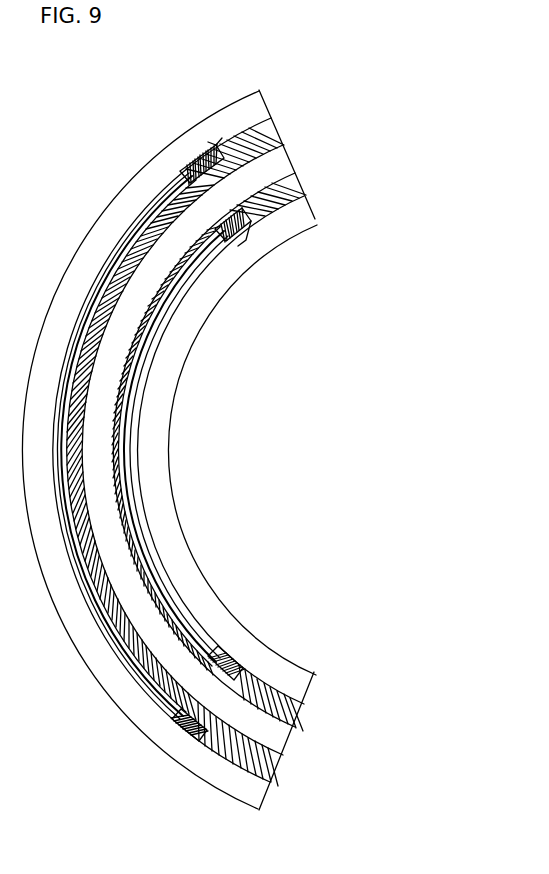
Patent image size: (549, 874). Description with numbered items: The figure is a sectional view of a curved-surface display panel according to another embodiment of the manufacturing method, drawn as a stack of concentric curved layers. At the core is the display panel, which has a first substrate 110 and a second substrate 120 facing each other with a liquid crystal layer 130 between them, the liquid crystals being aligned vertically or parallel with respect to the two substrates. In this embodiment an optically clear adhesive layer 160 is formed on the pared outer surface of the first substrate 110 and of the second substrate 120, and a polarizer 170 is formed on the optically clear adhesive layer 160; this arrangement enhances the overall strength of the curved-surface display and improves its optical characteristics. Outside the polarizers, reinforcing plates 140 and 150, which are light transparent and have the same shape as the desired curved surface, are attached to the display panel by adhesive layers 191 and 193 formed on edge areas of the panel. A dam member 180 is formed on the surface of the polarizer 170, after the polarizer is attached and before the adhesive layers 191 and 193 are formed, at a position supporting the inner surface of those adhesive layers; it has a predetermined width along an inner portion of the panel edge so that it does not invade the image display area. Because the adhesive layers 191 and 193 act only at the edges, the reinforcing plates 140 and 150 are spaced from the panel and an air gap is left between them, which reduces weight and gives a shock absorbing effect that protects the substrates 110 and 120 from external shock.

The first substrate 110 is at (305, 715).
The second substrate 120 is at (275, 768).
The liquid crystal layer 130 is at (290, 742).
The reinforcing plate 140 is at (313, 688).
The reinforcing plate 150 is at (263, 798).
The optically clear adhesive layer 160 is at (133, 478).
The polarizer 170 is at (132, 548).
The dam member 180 is at (182, 160).
The adhesive layer 191 is at (240, 248).
The adhesive layer 193 is at (206, 145).